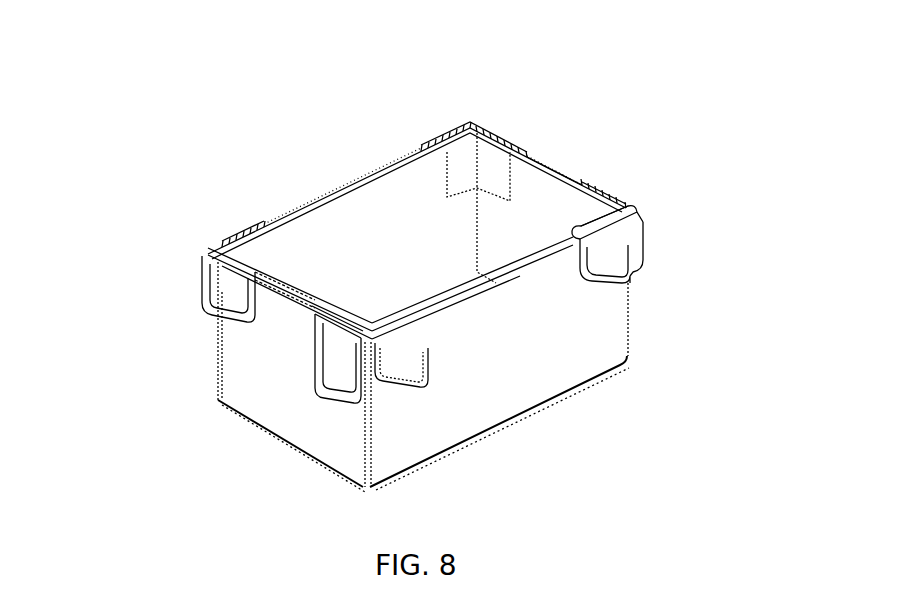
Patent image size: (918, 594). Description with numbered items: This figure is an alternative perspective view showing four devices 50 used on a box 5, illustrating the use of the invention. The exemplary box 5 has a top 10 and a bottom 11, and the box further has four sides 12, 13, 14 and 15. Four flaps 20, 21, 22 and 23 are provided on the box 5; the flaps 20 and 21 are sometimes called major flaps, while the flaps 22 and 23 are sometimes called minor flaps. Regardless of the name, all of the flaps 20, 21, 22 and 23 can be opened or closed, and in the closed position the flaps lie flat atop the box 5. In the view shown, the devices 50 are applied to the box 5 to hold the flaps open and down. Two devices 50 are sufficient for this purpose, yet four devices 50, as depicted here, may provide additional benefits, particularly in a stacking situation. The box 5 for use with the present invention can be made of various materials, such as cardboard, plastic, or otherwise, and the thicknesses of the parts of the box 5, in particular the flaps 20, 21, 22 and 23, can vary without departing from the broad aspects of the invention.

The box 5 is at (328, 187).
The top 10 is at (537, 153).
The bottom 11 is at (414, 464).
The side 12 is at (547, 165).
The side 13 is at (573, 371).
The side 14 is at (233, 362).
The side 15 is at (355, 225).
The flap 20 is at (570, 305).
The flap 21 is at (282, 217).
The flap 22 is at (570, 173).
The flap 23 is at (247, 333).
The device 50 is at (209, 244).